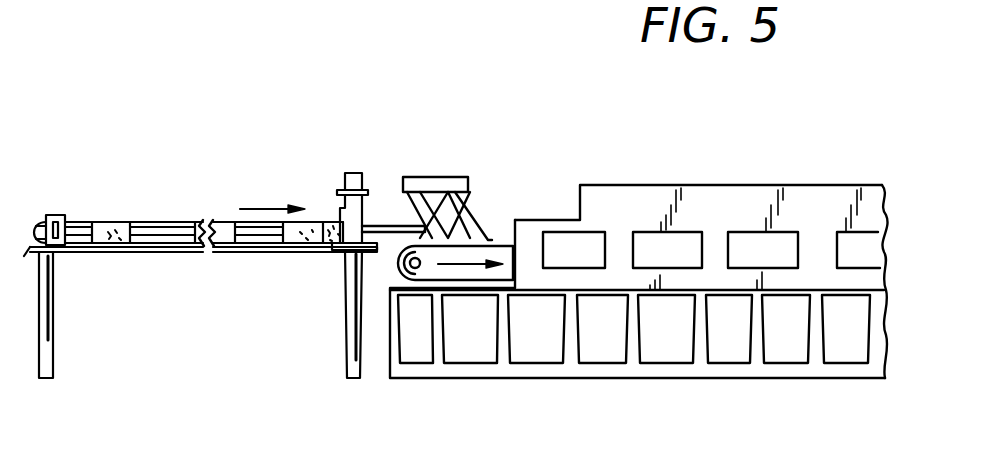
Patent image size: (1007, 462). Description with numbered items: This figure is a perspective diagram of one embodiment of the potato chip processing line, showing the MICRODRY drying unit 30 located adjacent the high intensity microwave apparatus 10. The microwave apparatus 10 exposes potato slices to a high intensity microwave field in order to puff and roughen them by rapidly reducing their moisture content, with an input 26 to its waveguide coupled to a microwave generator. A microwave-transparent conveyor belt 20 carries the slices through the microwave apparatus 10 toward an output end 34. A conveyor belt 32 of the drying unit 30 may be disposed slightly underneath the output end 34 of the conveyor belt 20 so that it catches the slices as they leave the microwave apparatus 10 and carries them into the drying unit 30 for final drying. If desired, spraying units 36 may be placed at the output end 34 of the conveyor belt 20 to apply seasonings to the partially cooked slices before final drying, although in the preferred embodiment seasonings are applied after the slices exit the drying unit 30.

The high intensity microwave apparatus 10 is at (201, 198).
The conveyor belt 20 is at (38, 222).
The input 26 is at (340, 206).
The drying unit 30 is at (715, 196).
The conveyor belt of the drying unit 32 is at (500, 228).
The output end 34 is at (480, 208).
The spraying units 36 is at (437, 177).